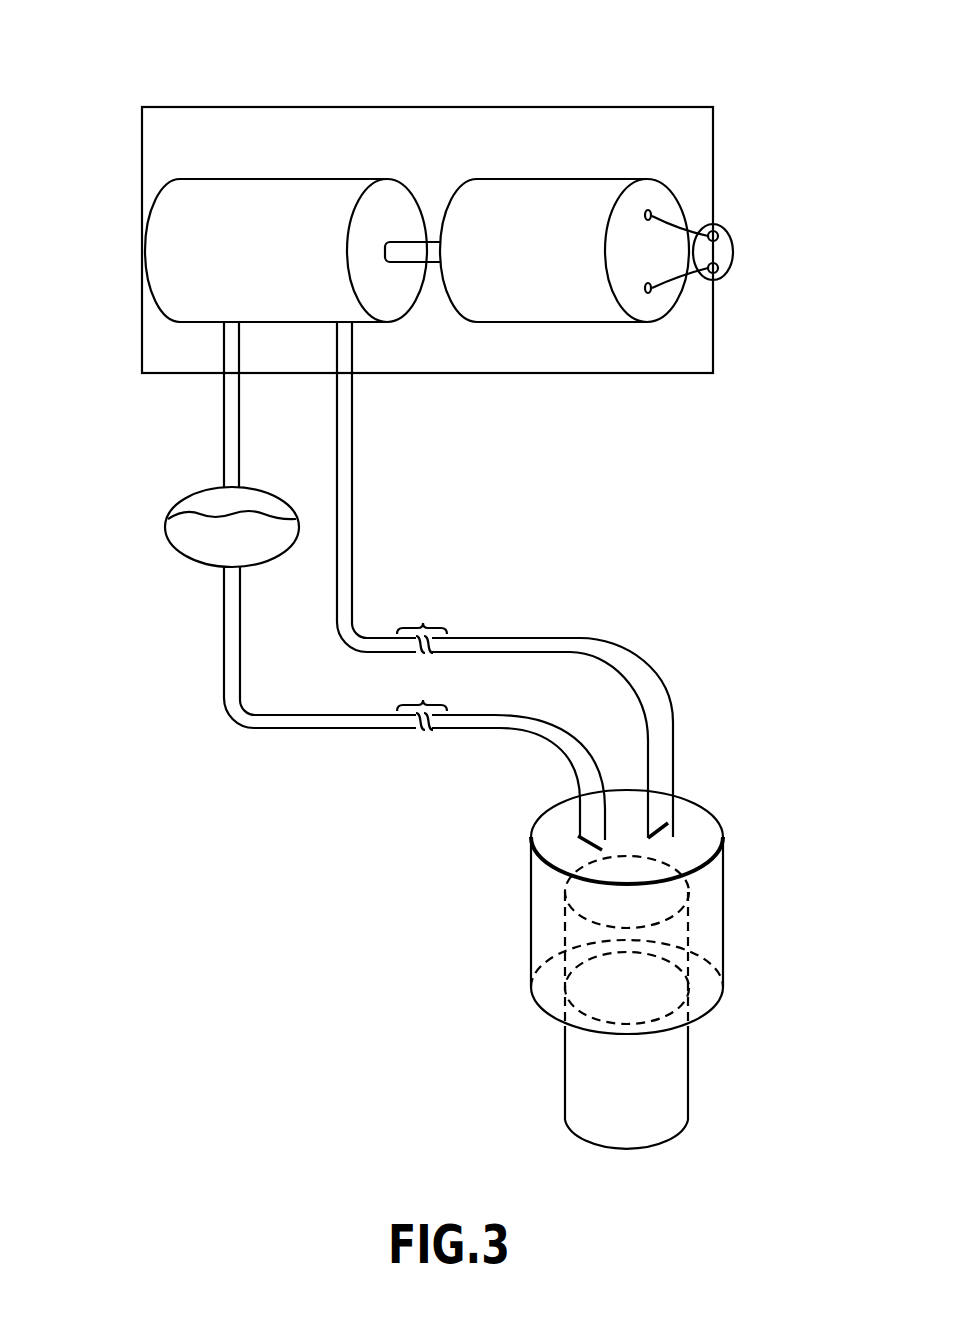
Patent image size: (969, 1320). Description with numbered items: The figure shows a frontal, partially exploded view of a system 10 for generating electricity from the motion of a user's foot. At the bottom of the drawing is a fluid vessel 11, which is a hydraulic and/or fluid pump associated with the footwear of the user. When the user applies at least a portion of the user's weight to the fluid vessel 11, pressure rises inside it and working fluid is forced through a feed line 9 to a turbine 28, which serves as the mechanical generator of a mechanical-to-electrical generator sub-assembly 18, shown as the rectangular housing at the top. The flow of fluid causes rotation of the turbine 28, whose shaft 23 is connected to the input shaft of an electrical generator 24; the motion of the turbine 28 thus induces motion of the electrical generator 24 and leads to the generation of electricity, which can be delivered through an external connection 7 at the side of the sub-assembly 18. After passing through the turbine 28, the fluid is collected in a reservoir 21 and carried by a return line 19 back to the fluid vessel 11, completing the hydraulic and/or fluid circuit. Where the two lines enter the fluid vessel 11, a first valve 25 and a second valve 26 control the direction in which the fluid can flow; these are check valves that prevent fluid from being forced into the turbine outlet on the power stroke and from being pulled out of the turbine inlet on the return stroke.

The mechanical-to-electrical generator sub-assembly 18 is at (203, 95).
The turbine 28 is at (284, 219).
The shaft 23 is at (431, 240).
The electrical generator 24 is at (546, 196).
The external connection 7 is at (733, 255).
The reservoir 21 is at (177, 535).
The return line 19 is at (357, 729).
The feed line 9 is at (493, 638).
The second valve 26 is at (597, 848).
The first valve 25 is at (670, 839).
The fluid vessel 11 is at (710, 942).
The system 10 is at (190, 820).